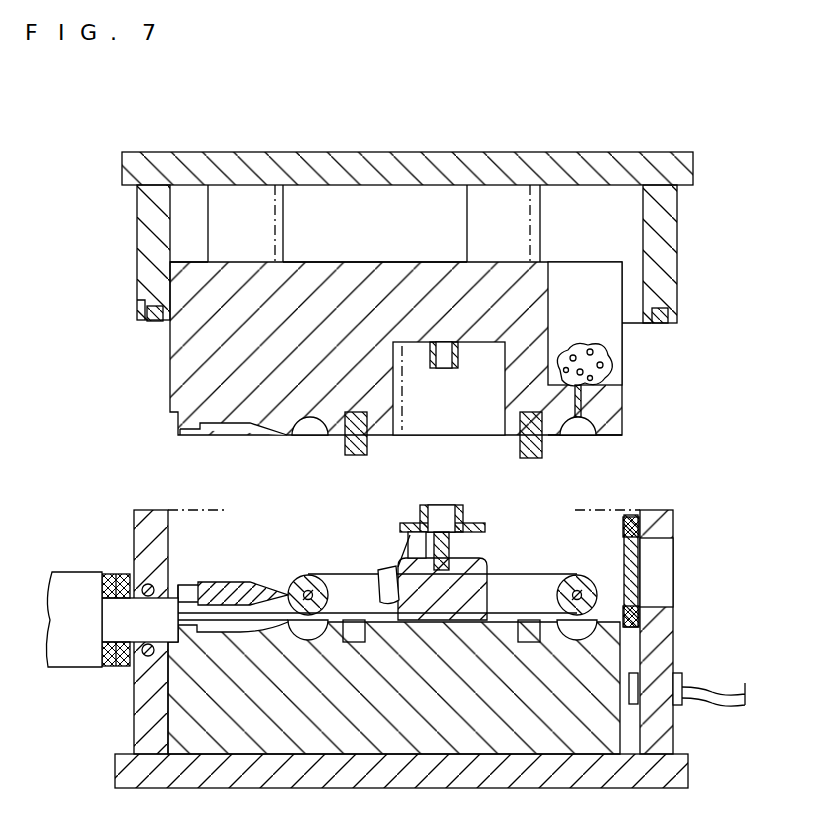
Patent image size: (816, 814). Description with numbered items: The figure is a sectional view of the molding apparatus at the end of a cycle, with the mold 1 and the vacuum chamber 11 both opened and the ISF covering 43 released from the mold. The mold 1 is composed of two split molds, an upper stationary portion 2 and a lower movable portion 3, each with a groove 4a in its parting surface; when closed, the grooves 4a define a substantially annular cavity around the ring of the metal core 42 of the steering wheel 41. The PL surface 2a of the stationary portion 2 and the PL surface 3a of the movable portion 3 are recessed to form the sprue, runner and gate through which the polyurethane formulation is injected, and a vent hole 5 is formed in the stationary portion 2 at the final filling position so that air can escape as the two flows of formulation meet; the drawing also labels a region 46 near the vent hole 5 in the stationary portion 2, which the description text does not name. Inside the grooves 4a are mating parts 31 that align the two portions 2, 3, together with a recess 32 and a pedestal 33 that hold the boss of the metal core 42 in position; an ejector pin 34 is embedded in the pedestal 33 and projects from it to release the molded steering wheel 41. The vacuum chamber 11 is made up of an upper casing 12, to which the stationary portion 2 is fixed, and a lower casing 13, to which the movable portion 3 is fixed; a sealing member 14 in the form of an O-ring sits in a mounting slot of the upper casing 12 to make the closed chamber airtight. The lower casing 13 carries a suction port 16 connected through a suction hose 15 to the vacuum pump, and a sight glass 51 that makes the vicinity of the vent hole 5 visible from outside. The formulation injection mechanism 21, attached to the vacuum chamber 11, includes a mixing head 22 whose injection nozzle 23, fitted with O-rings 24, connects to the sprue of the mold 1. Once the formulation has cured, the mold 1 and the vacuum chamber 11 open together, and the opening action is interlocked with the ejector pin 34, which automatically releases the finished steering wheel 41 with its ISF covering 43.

The mold 1 is at (705, 425).
The upper stationary portion 2 is at (608, 425).
The PL surface of the stationary portion 2a is at (612, 438).
The lower movable portion 3 is at (646, 518).
The PL surface of the movable portion 3a is at (606, 620).
The groove 4a is at (300, 440).
The vent hole 5 is at (583, 402).
The vacuum chamber 11 is at (80, 313).
The upper casing 12 is at (135, 302).
The lower casing 13 is at (150, 510).
The sealing member 14 is at (154, 323).
The suction hose 15 is at (712, 692).
The suction port 16 is at (633, 702).
The formulation injection mechanism 21 is at (62, 549).
The mixing head 22 is at (68, 662).
The injection nozzle 23 is at (118, 620).
The O-rings 24 is at (123, 667).
The mating parts 31 is at (443, 370).
The recess 32 is at (496, 430).
The pedestal 33 is at (478, 570).
The ejector pin 34 is at (414, 538).
The steering wheel 41 is at (286, 566).
The metal core 42 is at (577, 580).
The ISF covering 43 is at (308, 582).
The cavity 46 is at (610, 355).
The sight glass 51 is at (666, 572).